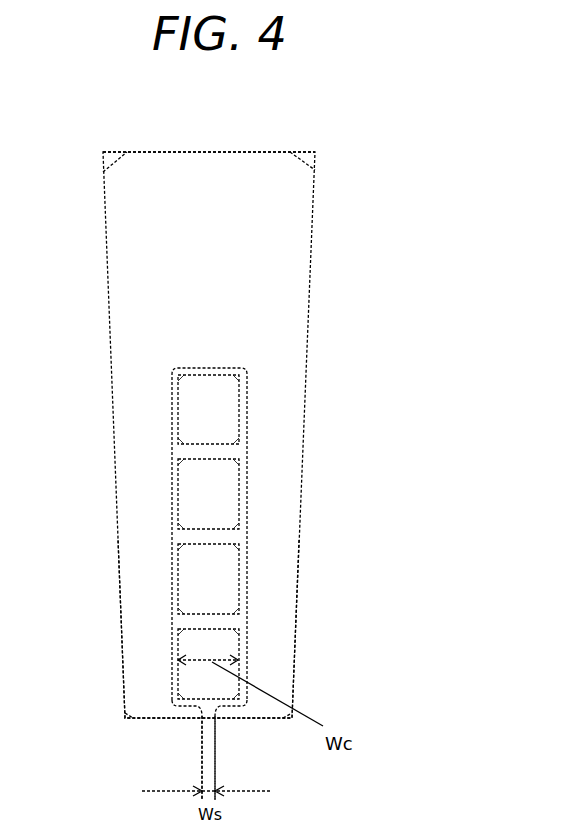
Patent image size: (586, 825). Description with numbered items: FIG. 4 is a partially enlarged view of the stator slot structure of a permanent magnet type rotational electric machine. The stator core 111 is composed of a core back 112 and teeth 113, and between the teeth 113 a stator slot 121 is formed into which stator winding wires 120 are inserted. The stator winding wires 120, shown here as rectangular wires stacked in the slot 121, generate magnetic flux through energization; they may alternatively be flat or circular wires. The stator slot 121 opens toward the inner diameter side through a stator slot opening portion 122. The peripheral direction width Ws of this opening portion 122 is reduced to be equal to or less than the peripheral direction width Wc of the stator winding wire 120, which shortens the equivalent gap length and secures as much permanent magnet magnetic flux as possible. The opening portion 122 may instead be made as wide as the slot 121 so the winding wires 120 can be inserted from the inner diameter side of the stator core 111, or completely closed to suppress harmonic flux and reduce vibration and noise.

The stator core 111 is at (278, 168).
The core back 112 is at (245, 302).
The teeth 113 is at (265, 635).
The stator winding wires 120 is at (220, 568).
The stator slot 121 is at (242, 438).
The stator slot opening portion 122 is at (205, 702).